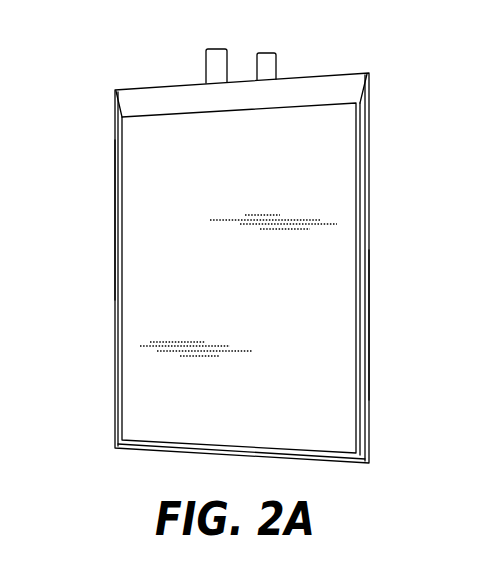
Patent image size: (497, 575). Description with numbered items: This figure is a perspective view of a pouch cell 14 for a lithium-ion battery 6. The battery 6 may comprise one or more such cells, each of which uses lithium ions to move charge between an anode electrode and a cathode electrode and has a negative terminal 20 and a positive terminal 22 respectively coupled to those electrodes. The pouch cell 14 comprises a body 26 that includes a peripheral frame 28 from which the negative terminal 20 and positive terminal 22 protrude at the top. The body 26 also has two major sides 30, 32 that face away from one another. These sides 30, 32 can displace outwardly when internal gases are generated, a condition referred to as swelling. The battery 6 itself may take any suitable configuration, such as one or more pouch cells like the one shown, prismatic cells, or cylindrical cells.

The lithium-ion battery 6 is at (90, 325).
The pouch cell 14 is at (247, 303).
The negative terminal 20 is at (218, 48).
The positive terminal 22 is at (272, 52).
The body 26 is at (253, 170).
The peripheral frame 28 is at (116, 222).
The first major side 30 is at (197, 398).
The second major side 32 is at (370, 323).